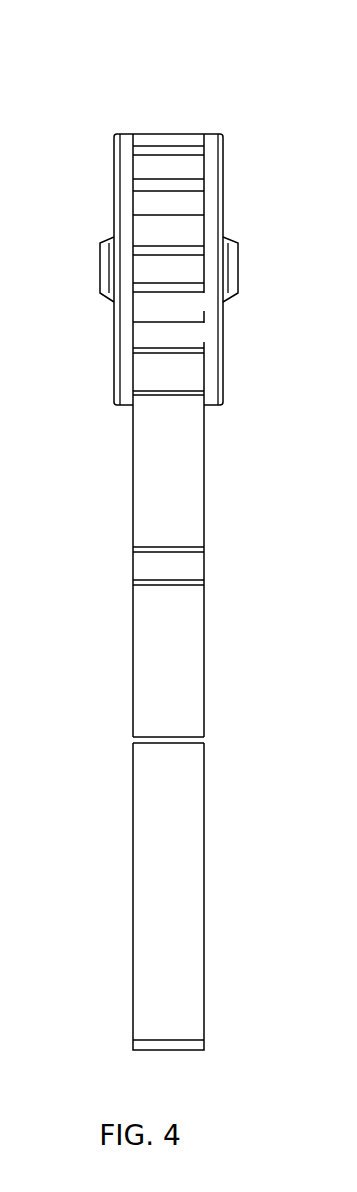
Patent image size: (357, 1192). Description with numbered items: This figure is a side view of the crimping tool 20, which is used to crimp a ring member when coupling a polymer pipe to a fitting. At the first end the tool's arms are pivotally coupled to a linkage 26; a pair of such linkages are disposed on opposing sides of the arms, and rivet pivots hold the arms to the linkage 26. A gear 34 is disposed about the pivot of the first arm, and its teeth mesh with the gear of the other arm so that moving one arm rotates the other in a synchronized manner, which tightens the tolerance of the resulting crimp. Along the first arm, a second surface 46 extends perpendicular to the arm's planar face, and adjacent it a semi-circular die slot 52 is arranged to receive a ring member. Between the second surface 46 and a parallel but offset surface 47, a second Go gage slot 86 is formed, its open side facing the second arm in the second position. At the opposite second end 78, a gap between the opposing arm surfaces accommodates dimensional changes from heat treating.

The crimping tool 20 is at (290, 105).
The gear 34 is at (149, 118).
The linkage 26 is at (115, 352).
The second surface 46 is at (174, 368).
The die slot 52 is at (157, 488).
The second Go gage slot 86 is at (155, 668).
The surface 47 is at (187, 890).
The second end 78 is at (141, 1067).